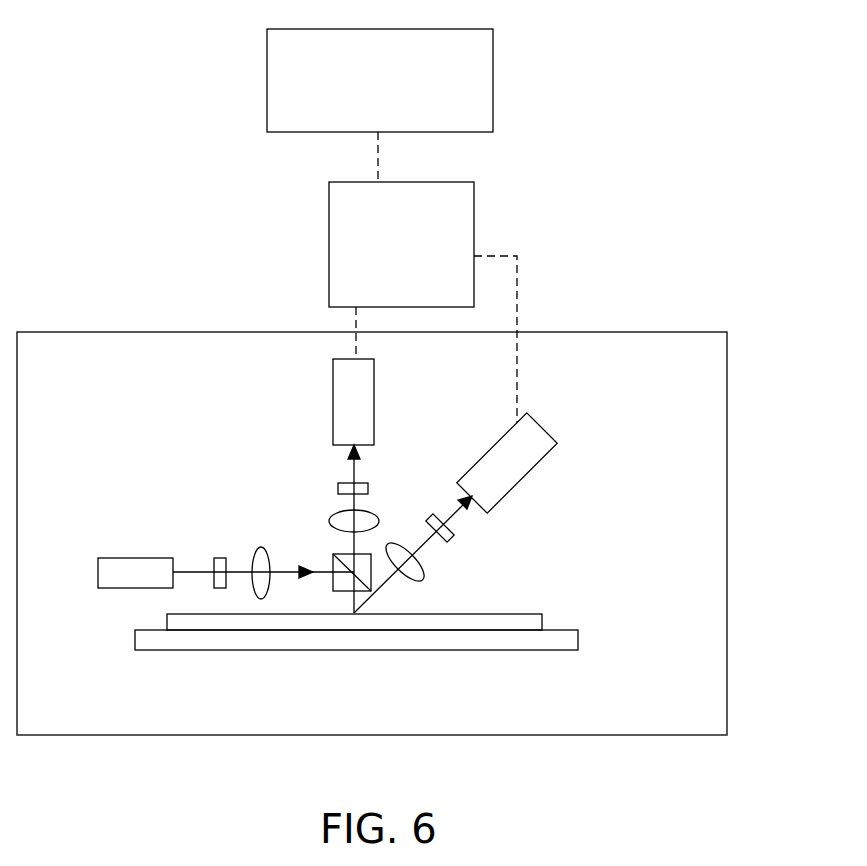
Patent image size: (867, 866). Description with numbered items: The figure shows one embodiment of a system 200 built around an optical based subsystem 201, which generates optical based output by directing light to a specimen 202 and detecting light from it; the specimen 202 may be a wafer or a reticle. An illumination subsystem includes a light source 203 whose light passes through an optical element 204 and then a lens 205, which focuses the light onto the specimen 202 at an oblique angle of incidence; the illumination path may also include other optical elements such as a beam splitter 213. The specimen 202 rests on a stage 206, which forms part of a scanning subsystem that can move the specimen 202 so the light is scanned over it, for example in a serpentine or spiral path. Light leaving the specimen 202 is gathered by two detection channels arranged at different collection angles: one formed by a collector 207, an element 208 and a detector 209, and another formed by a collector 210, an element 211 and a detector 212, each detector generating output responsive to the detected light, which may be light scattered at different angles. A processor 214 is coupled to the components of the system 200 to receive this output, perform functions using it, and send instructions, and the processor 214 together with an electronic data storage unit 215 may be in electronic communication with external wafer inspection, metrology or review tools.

The system 200 is at (157, 101).
The optical based subsystem 201 is at (727, 353).
The specimen 202 is at (167, 625).
The light source 203 is at (108, 558).
The optical element 204 is at (220, 558).
The lens 205 is at (258, 548).
The stage 206 is at (135, 645).
The collector 207 is at (335, 517).
The element 208 is at (340, 485).
The detector 209 is at (333, 403).
The collector 210 is at (420, 575).
The element 211 is at (452, 538).
The detector 212 is at (540, 465).
The beam splitter 213 is at (347, 554).
The processor 214 is at (423, 277).
The electronic data storage unit 215 is at (380, 80).